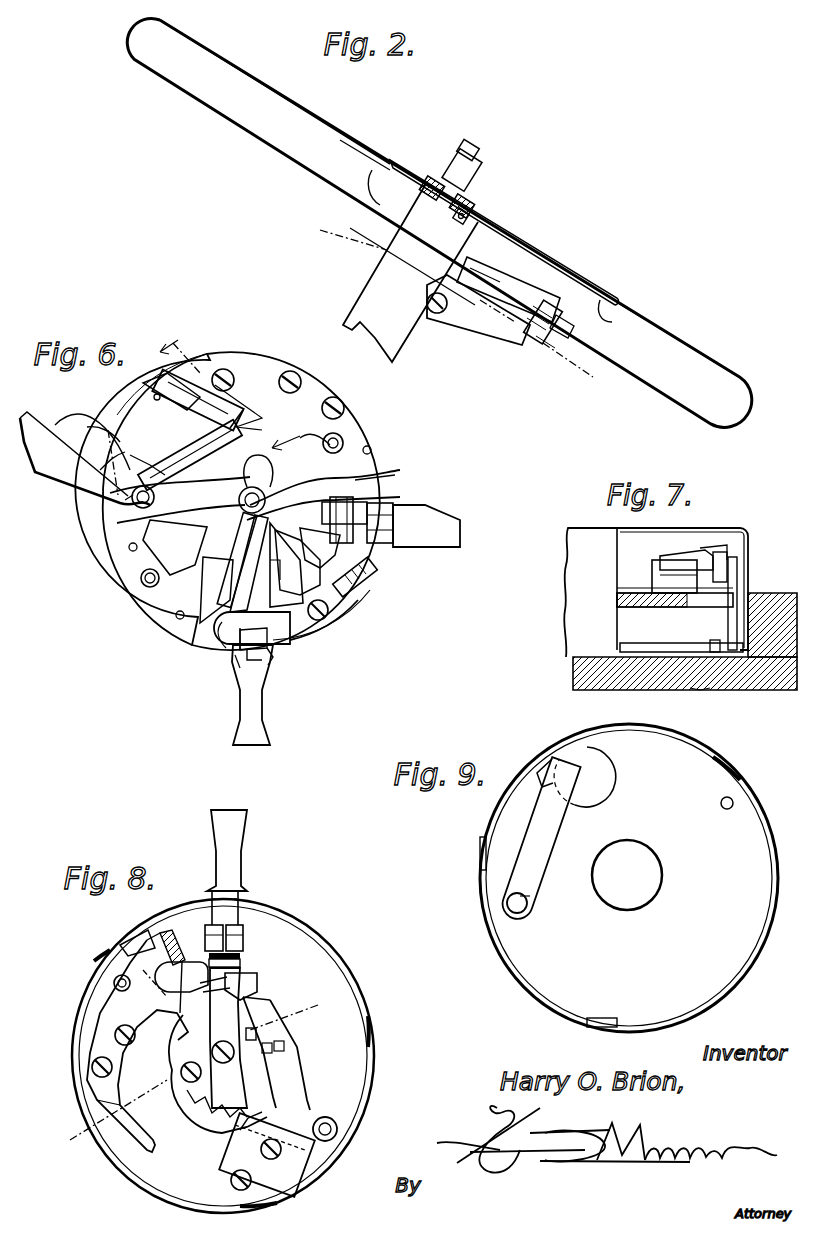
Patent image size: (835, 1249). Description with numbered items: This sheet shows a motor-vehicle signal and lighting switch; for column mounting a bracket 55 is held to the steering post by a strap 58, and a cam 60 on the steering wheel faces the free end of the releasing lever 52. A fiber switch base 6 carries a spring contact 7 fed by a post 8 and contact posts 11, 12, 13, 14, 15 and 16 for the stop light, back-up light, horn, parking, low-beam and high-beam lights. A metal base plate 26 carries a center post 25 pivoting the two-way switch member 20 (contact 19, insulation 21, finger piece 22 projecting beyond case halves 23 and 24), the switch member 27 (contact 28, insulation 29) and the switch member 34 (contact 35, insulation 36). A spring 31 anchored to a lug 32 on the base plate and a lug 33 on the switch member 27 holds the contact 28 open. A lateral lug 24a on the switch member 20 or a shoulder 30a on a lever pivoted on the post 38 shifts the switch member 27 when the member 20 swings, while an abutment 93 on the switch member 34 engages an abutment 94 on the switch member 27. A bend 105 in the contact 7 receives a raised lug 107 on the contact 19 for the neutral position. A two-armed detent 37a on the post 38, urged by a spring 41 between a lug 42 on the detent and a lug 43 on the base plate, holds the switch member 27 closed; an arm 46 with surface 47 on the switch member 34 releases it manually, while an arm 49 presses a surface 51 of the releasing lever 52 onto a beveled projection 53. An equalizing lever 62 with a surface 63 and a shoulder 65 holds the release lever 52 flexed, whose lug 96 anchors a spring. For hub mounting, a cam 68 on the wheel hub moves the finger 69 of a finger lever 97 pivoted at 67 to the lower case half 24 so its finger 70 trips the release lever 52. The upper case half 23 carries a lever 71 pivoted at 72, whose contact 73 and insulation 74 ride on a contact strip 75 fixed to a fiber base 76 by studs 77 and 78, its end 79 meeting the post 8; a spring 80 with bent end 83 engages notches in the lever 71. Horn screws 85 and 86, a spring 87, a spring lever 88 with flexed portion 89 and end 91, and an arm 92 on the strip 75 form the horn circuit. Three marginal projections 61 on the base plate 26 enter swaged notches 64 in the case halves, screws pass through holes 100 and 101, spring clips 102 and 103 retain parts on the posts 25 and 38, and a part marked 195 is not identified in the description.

In FIG. 6, the switch base 6 is at (355, 410).
In FIG. 7, the switch base 6 is at (570, 597).
In FIG. 6, the contact 7 is at (310, 670).
In FIG. 6, the post 8 is at (320, 630).
In FIG. 8, the contact post 11 is at (55, 1141).
In FIG. 2, the contact post 12 is at (439, 222).
In FIG. 6, the contact post 13 is at (142, 585).
In FIG. 6, the contact post 14 is at (226, 368).
In FIG. 6, the contact post 15 is at (292, 371).
In FIG. 6, the contact post 16 is at (342, 403).
In FIG. 6, the contact 19 is at (273, 657).
In FIG. 6, the switch member 20 is at (247, 650).
In FIG. 6, the insulation 21 is at (240, 637).
In FIG. 6, the finger piece 22 is at (243, 727).
In FIG. 2, the case half 23 is at (520, 297).
In FIG. 7, the case half 23 is at (580, 533).
In FIG. 8, the case half 23 is at (147, 915).
In FIG. 2, the case half 24 is at (513, 307).
In FIG. 7, the case half 24 is at (577, 620).
In FIG. 9, the case half 24 is at (560, 733).
In FIG. 6, the lateral lug 24a is at (303, 577).
In FIG. 6, the center pivot post 25 is at (243, 440).
In FIG. 6, the base plate 26 is at (142, 418).
In FIG. 7, the base plate 26 is at (627, 583).
In FIG. 6, the switch member 27 is at (347, 543).
In FIG. 6, the contact 28 is at (377, 567).
In FIG. 6, the insulation 29 is at (373, 588).
In FIG. 6, the shoulder 30a is at (266, 499).
In FIG. 6, the spring 31 is at (340, 440).
In FIG. 6, the lug 32 is at (393, 473).
In FIG. 6, the lug 33 is at (203, 588).
In FIG. 6, the switch member 34 is at (395, 512).
In FIG. 6, the contact 35 is at (392, 547).
In FIG. 6, the insulation 36 is at (357, 500).
In FIG. 6, the detent 37a is at (124, 432).
In FIG. 6, the pivot post 38 is at (120, 520).
In FIG. 7, the pivot post 38 is at (693, 550).
In FIG. 6, the spring 41 is at (152, 390).
In FIG. 6, the lug 42 is at (158, 378).
In FIG. 7, the lug 42 is at (727, 553).
In FIG. 6, the lug 43 is at (234, 414).
In FIG. 6, the arm 46 is at (158, 494).
In FIG. 6, the surface 47 is at (187, 477).
In FIG. 6, the arm 49 is at (200, 522).
In FIG. 6, the surface 51 is at (107, 537).
In FIG. 6, the releasing lever 52 is at (93, 477).
In FIG. 7, the beveled projection 53 is at (653, 573).
In FIG. 2, the bracket 55 is at (467, 312).
In FIG. 2, the strap 58 is at (380, 273).
In FIG. 2, the cam 60 is at (495, 213).
In FIG. 6, the marginal projections 61 is at (112, 416).
In FIG. 6, the equalizing lever 62 is at (236, 517).
In FIG. 6, the surface 63 is at (230, 567).
In FIG. 9, the swaged notches 64 is at (480, 853).
In FIG. 8, the swaged notches 64 is at (96, 963).
In FIG. 6, the shoulder 65 is at (120, 505).
In FIG. 7, the pivot 67 is at (687, 640).
In FIG. 9, the pivot 67 is at (527, 910).
In FIG. 7, the cam 68 is at (747, 687).
In FIG. 7, the finger 69 is at (713, 690).
In FIG. 9, the finger 69 is at (580, 750).
In FIG. 7, the finger 70 is at (740, 583).
In FIG. 9, the finger 70 is at (543, 770).
In FIG. 8, the lever 71 is at (229, 856).
In FIG. 8, the pivot 72 is at (223, 1041).
In FIG. 8, the contact 73 is at (243, 937).
In FIG. 8, the insulation 74 is at (240, 913).
In FIG. 8, the contact strip 75 is at (140, 945).
In FIG. 8, the fiber base 76 is at (96, 1007).
In FIG. 8, the stud 77 is at (113, 985).
In FIG. 8, the stud 78 is at (337, 1130).
In FIG. 8, the end 79 is at (123, 1139).
In FIG. 8, the spring 80 is at (245, 1130).
In FIG. 8, the end 83 is at (212, 1137).
In FIG. 8, the screw 85 is at (255, 1030).
In FIG. 8, the screw 86 is at (181, 1074).
In FIG. 8, the spring 87 is at (226, 1105).
In FIG. 8, the spring lever 88 is at (290, 1077).
In FIG. 8, the flexed portion 89 is at (308, 1163).
In FIG. 8, the end 91 is at (259, 978).
In FIG. 8, the arm 92 is at (203, 983).
In FIG. 6, the abutment 93 is at (343, 530).
In FIG. 6, the abutment 94 is at (333, 533).
In FIG. 6, the lug 96 is at (231, 388).
In FIG. 7, the lug 96 is at (727, 543).
In FIG. 7, the finger lever 97 is at (713, 640).
In FIG. 9, the finger lever 97 is at (533, 883).
In FIG. 9, the hole 100 is at (733, 801).
In FIG. 9, the hole 101 is at (523, 953).
In FIG. 6, the spring clip 102 is at (330, 432).
In FIG. 6, the spring clip 103 is at (110, 473).
In FIG. 6, the bend 105 is at (213, 630).
In FIG. 6, the raised lug 107 is at (240, 660).
In FIG. 6, the pin 195 is at (157, 450).